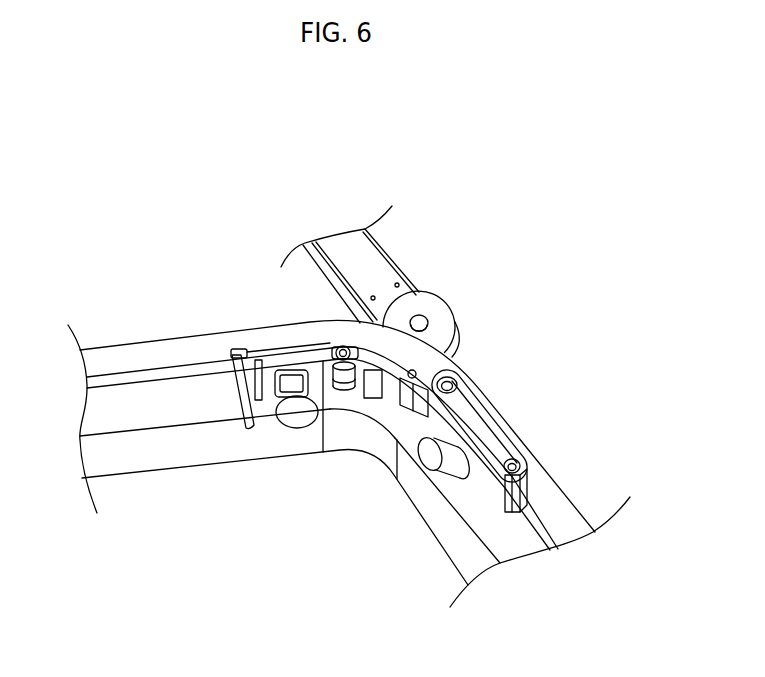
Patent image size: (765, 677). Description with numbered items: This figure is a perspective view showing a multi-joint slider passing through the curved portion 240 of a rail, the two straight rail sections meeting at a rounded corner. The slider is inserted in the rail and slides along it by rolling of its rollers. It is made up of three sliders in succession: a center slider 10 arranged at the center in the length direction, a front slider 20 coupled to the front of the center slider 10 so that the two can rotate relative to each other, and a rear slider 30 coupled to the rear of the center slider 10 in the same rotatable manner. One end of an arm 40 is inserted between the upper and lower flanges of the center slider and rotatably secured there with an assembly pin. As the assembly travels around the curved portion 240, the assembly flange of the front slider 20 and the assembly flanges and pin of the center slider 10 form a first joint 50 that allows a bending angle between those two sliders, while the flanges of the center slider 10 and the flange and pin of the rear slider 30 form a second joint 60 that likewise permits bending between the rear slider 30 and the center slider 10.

The center slider 10 is at (389, 409).
The front slider 20 is at (270, 437).
The rear slider 30 is at (477, 486).
The arm 40 is at (388, 262).
The first joint 50 is at (320, 334).
The second joint 60 is at (478, 366).
The curved portion 240 is at (330, 457).